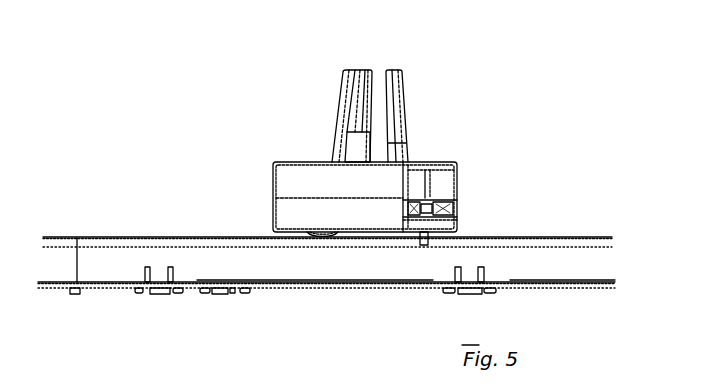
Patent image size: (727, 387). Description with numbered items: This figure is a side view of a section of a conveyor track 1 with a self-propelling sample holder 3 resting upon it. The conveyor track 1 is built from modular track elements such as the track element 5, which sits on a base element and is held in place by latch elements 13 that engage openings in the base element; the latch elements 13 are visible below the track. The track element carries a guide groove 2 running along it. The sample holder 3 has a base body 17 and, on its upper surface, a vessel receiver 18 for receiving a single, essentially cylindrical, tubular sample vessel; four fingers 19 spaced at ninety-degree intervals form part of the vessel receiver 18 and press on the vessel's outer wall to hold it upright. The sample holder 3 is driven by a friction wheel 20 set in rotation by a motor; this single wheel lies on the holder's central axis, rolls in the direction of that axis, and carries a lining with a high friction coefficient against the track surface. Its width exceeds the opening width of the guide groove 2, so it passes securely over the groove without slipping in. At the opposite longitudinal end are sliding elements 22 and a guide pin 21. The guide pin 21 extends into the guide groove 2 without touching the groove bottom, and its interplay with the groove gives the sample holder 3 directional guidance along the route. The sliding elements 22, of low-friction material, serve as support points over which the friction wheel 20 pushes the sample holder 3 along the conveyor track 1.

The conveyor track 1 is at (70, 220).
The guide groove 2 is at (146, 237).
The self-propelling sample holder 3 is at (288, 168).
The track element 5 is at (571, 237).
The latch element 13 is at (217, 295).
The base body 17 is at (385, 178).
The vessel receiver 18 is at (418, 85).
The finger 19 is at (372, 118).
The friction wheel 20 is at (322, 237).
The guide pin 21 is at (422, 242).
The sliding element 22 is at (445, 238).